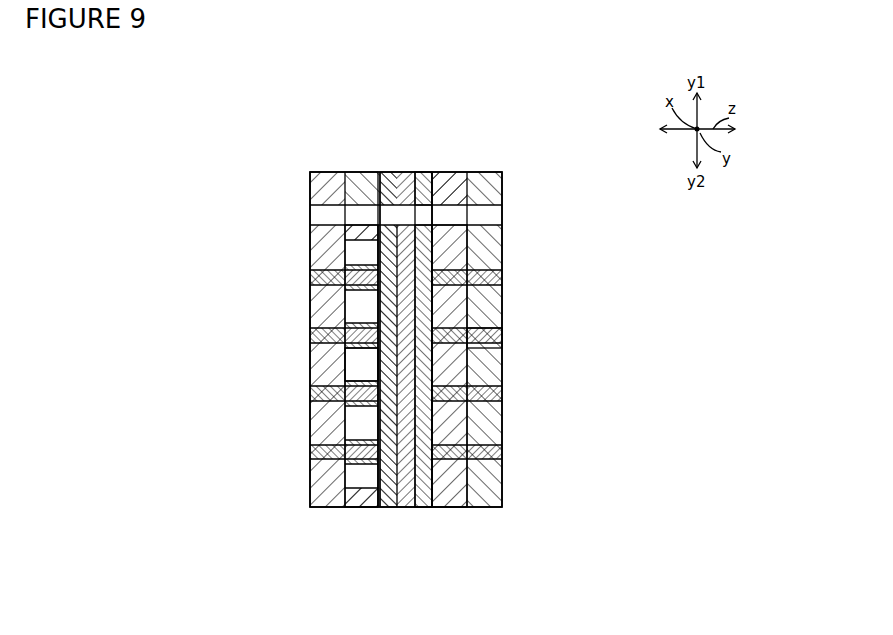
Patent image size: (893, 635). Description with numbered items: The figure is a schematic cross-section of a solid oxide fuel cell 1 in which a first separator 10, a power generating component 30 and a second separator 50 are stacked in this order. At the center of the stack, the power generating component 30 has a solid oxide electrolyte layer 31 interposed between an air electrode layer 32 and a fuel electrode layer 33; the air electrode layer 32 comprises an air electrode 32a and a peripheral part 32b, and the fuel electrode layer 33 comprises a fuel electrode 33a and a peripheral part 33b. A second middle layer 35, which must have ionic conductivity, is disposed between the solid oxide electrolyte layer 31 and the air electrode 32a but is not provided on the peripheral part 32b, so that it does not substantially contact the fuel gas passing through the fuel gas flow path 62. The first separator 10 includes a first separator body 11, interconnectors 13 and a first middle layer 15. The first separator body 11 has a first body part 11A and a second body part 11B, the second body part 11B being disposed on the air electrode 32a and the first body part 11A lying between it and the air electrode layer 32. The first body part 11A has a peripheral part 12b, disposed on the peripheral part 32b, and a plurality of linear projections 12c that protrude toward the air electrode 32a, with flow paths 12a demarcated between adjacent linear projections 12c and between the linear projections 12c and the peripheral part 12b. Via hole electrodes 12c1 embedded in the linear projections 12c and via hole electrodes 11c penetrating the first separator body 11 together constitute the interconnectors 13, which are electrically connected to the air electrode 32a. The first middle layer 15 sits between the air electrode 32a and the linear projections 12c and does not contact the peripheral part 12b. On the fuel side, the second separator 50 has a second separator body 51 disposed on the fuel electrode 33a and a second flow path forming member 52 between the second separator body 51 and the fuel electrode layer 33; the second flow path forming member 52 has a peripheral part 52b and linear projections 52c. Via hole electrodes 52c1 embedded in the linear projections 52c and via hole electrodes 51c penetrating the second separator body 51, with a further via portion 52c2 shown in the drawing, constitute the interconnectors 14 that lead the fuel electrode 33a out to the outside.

The solid oxide fuel cell 1 is at (549, 130).
The first separator 10 is at (320, 170).
The first separator body 11 is at (350, 579).
The first body part 11A is at (353, 508).
The second body part 11B is at (322, 508).
The via hole electrodes 11c is at (310, 277).
The flow paths 12a is at (358, 267).
The peripheral part 12b is at (361, 171).
The linear projections 12c is at (363, 465).
The via hole electrodes 12c1 is at (362, 446).
The interconnectors 13 is at (310, 335).
The interconnectors 14 is at (503, 393).
The first middle layer 15 is at (355, 345).
The power generating component 30 is at (445, 579).
The solid oxide electrolyte layer 31 is at (406, 508).
The air electrode layer 32 is at (393, 508).
The air electrode 32a is at (377, 240).
The peripheral part 32b is at (405, 172).
The fuel electrode layer 33 is at (420, 508).
The fuel electrode 33a is at (433, 250).
The peripheral part 33b is at (433, 192).
The second middle layer 35 is at (376, 368).
The second separator 50 is at (530, 579).
The second separator body 51 is at (487, 508).
The via hole electrodes 51c is at (478, 345).
The second flow path forming member 52 is at (456, 508).
The peripheral part 52b is at (449, 172).
The linear projections 52c is at (441, 508).
The via hole electrodes 52c1 is at (458, 460).
The upper side conductor portion 52c2 is at (488, 337).
The fuel gas flow path 62 is at (327, 207).